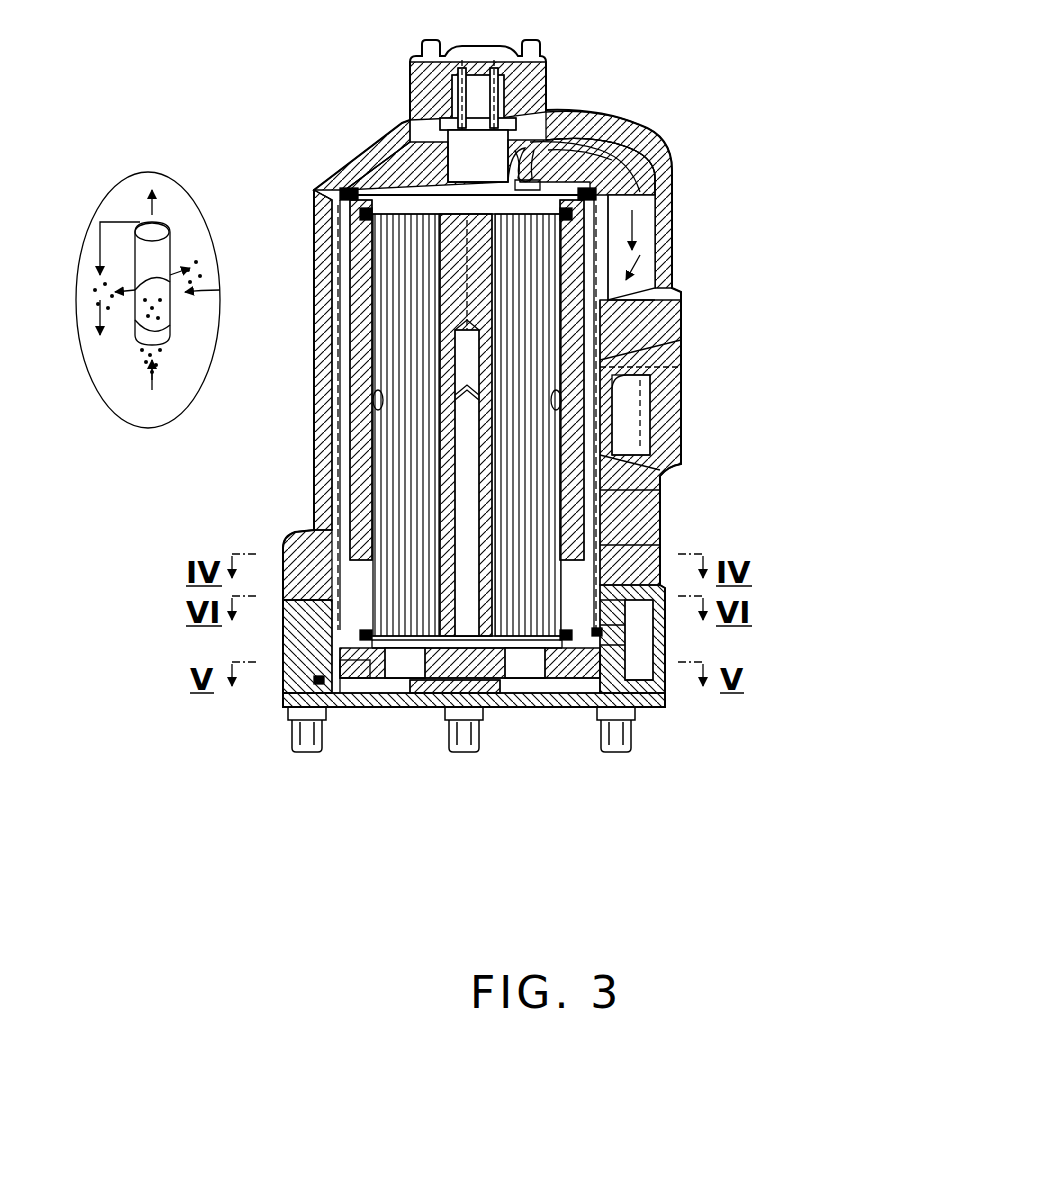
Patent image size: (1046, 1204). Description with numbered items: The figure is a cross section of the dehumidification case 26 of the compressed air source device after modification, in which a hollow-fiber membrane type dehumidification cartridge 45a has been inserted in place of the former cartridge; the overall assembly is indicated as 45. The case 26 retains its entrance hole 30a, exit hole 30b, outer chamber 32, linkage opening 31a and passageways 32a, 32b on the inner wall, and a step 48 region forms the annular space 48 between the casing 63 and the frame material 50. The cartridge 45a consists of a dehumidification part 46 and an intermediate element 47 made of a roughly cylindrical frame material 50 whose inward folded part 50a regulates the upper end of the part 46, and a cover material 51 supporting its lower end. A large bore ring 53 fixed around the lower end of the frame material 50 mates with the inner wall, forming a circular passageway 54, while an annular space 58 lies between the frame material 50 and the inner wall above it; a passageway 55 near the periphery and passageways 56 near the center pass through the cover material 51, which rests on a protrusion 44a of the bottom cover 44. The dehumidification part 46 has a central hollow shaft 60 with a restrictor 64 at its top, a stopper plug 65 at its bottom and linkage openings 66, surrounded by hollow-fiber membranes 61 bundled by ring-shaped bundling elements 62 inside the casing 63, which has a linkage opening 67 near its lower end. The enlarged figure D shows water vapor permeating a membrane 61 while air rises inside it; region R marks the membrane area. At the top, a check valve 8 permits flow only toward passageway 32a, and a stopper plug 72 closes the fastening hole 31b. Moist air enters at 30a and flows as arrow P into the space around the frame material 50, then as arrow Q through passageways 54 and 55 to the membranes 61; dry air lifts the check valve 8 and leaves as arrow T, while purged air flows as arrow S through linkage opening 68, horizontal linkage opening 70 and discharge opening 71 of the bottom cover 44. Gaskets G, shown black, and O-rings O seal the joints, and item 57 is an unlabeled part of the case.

The filter device 45 is at (347, 74).
The dehumidification case 26 is at (666, 132).
The ring-shaped bundling element 62 is at (316, 215).
The restrictor 64 is at (450, 212).
The stopper plug 72 is at (560, 150).
The check valve 8 is at (524, 180).
The fastening hole 31b is at (528, 175).
The gasket G is at (348, 188).
The hollow shaft 60 is at (440, 455).
The linkage opening 66 is at (440, 398).
The annular space 58 is at (325, 290).
The hollow-fiber membrane 61 is at (378, 400).
The region R is at (463, 235).
The outer chamber 32 is at (673, 256).
The passageway 32a is at (673, 227).
The annular space 48 is at (677, 287).
The entrance hole 30a is at (660, 335).
The linkage opening 31a is at (600, 365).
The arrow P is at (605, 367).
The exit hole 30b is at (655, 405).
The frame material 50 is at (605, 455).
The folded part 50a is at (652, 150).
The arrow T is at (612, 124).
The dehumidification part 46 is at (640, 472).
The casing 63 is at (610, 490).
The dehumidification cartridge 45a is at (600, 515).
The linkage opening 67 is at (600, 545).
The passageway 32b is at (634, 557).
The linkage opening 68 is at (660, 588).
The horizontal linkage opening 70 is at (640, 665).
The discharge opening 71 is at (640, 695).
The arrow S is at (628, 690).
The left foot upper 57 is at (322, 560).
The large bore ring 53 is at (330, 612).
The circular passageway 54 is at (283, 525).
The passageway 55 is at (283, 670).
The passageway 56 is at (425, 690).
The stopper plug 65 is at (485, 655).
The bottom cover 44 is at (520, 709).
The protrusion 44a is at (415, 665).
The intermediate element 47 is at (575, 665).
The cover material 51 is at (355, 668).
The arrow Q is at (363, 680).
The O-ring O is at (547, 706).
The enlarged figure D is at (150, 172).